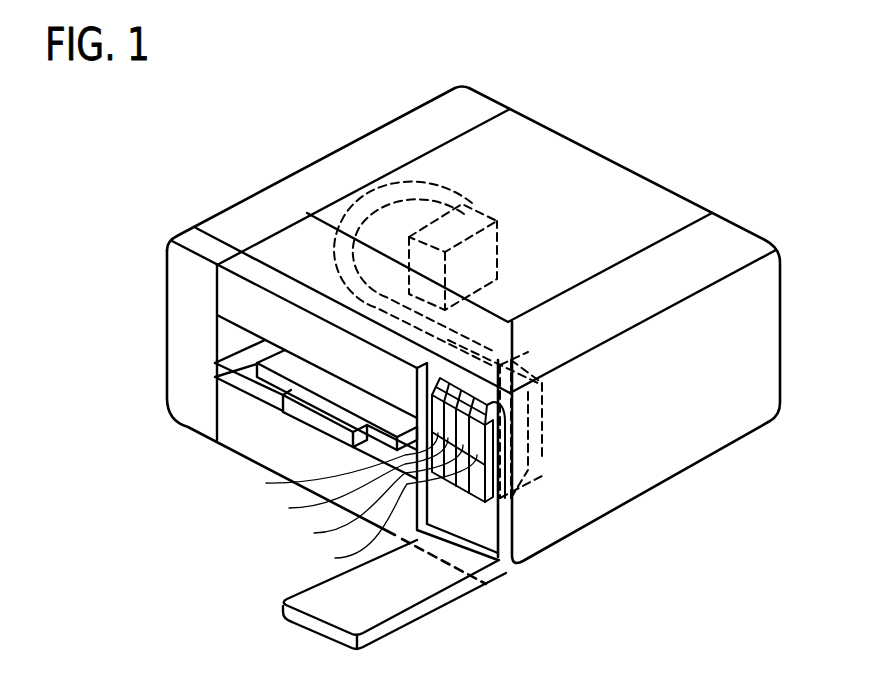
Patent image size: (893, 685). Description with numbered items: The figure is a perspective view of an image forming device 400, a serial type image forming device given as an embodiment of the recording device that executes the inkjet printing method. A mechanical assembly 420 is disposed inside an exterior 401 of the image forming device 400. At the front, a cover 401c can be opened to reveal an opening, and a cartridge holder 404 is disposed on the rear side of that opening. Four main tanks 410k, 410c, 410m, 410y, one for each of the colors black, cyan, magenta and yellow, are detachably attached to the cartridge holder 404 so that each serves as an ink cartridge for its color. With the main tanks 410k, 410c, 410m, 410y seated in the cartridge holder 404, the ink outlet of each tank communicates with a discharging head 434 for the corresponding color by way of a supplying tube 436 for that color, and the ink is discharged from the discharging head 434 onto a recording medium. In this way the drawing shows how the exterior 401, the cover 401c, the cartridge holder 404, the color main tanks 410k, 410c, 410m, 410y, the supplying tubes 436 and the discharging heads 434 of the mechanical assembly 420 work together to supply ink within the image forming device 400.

The image forming device 400 is at (703, 110).
The exterior 401 is at (283, 181).
The cover 401c is at (423, 606).
The mechanical assembly 420 is at (556, 217).
The discharging head 434 is at (472, 208).
The supplying tube 436 is at (377, 188).
The cartridge holder 404 is at (545, 432).
The main tank 410k is at (361, 440).
The main tank 410c is at (350, 455).
The main tank 410m is at (367, 471).
The main tank 410y is at (387, 497).